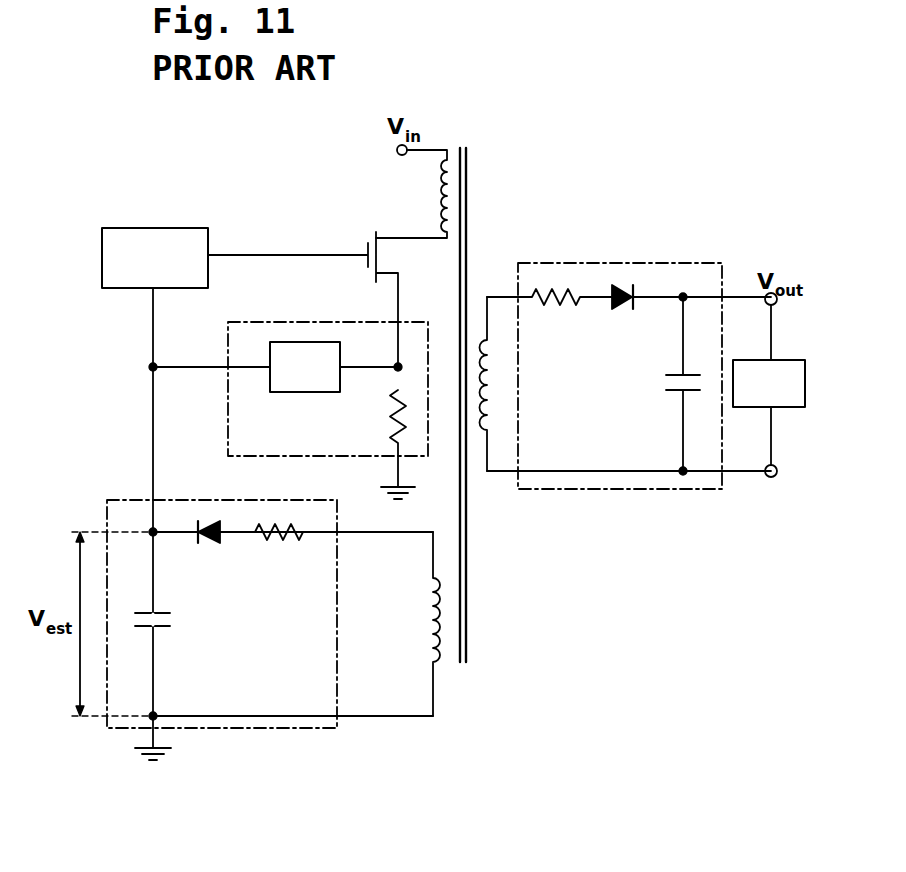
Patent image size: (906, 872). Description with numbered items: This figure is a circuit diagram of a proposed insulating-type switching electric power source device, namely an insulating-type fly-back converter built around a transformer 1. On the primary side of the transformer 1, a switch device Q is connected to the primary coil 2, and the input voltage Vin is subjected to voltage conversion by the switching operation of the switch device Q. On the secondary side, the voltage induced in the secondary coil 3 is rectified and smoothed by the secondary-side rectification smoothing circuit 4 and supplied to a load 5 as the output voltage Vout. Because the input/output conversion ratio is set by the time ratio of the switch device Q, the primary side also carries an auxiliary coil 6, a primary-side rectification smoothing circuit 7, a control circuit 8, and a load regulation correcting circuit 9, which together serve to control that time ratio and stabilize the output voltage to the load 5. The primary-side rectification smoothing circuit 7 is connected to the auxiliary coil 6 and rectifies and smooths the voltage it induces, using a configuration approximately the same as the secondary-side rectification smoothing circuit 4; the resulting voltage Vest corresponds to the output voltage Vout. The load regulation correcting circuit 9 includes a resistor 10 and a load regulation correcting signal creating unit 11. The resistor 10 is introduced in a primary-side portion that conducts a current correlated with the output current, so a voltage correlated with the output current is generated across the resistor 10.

The transformer 1 is at (467, 148).
The primary coil 2 is at (431, 195).
The secondary coil 3 is at (490, 405).
The secondary-side rectification smoothing circuit 4 is at (614, 262).
The load 5 is at (805, 386).
The auxiliary coil 6 is at (426, 618).
The primary-side rectification smoothing circuit 7 is at (238, 730).
The control circuit 8 is at (153, 227).
The load regulation correcting circuit 9 is at (290, 410).
The resistor 10 is at (390, 426).
The load regulation correcting signal creating unit 11 is at (292, 393).
The switch device Q is at (364, 242).